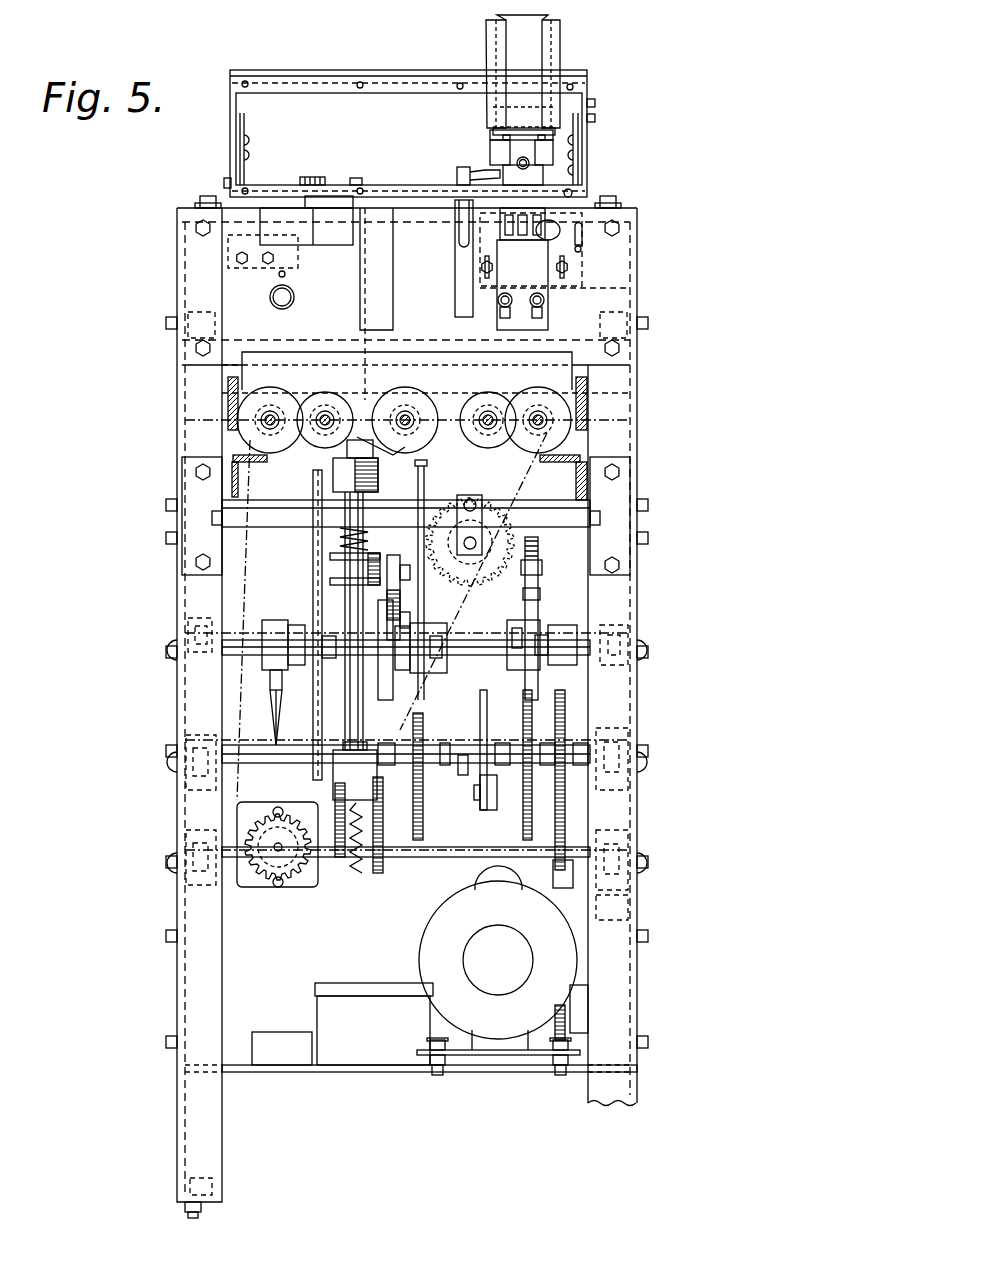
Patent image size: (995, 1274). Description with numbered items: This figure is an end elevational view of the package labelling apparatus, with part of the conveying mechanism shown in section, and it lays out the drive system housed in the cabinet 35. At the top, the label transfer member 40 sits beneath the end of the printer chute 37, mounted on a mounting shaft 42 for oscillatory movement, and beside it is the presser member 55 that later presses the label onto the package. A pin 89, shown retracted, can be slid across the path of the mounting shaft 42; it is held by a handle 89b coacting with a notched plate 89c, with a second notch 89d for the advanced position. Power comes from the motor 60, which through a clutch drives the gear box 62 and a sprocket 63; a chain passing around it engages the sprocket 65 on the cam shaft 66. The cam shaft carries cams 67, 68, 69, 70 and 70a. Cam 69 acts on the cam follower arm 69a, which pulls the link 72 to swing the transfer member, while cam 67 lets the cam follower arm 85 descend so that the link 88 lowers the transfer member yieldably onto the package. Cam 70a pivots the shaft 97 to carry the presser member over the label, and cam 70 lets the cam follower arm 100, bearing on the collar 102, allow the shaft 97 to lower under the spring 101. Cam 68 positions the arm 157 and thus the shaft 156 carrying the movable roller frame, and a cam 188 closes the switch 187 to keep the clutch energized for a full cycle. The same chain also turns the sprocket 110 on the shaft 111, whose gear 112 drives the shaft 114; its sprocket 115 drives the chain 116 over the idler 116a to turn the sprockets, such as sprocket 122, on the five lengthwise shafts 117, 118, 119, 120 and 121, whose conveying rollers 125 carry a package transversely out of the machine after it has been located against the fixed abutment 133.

The cabinet 35 is at (638, 905).
The printer chute 37 is at (556, 60).
The label transfer member 40 is at (492, 155).
The mounting shaft 42 is at (460, 236).
The presser member 55 is at (383, 225).
The motor 60 is at (440, 938).
The gear box 62 is at (563, 1037).
The sprocket 63 is at (580, 990).
The sprocket 65 is at (566, 706).
The cam shaft 66 is at (460, 772).
The cam 67 is at (533, 709).
The cam 68 is at (488, 706).
The cam 69 is at (424, 720).
The cam follower arm 69a is at (432, 674).
The cam 70 is at (386, 808).
The cam 70a is at (335, 860).
The link 72 is at (425, 602).
The cam follower arm 85 is at (548, 625).
The link 88 is at (538, 610).
The pin 89 is at (560, 236).
The handle 89b is at (585, 246).
The notched plate 89c is at (632, 290).
The second notch 89d is at (524, 285).
The shaft 97 is at (352, 698).
The cam follower arm 100 is at (395, 560).
The spring 101 is at (356, 875).
The collar 102 is at (330, 558).
The sprocket 110 is at (566, 890).
The shaft 111 is at (443, 858).
The gear 112 is at (257, 882).
The shaft 114 is at (280, 855).
The sprocket 115 is at (305, 806).
The chain 116 is at (244, 710).
The idler 116a is at (455, 512).
The shaft 117 is at (272, 412).
The shaft 118 is at (326, 412).
The shaft 119 is at (407, 412).
The shaft 120 is at (488, 412).
The shaft 121 is at (540, 412).
The sprocket 122 is at (325, 466).
The conveying rollers 125 is at (395, 460).
The fixed abutment 133 is at (428, 355).
The shaft 156 is at (586, 432).
The arm 157 is at (483, 806).
The switch 187 is at (275, 622).
The cam 188 is at (272, 717).